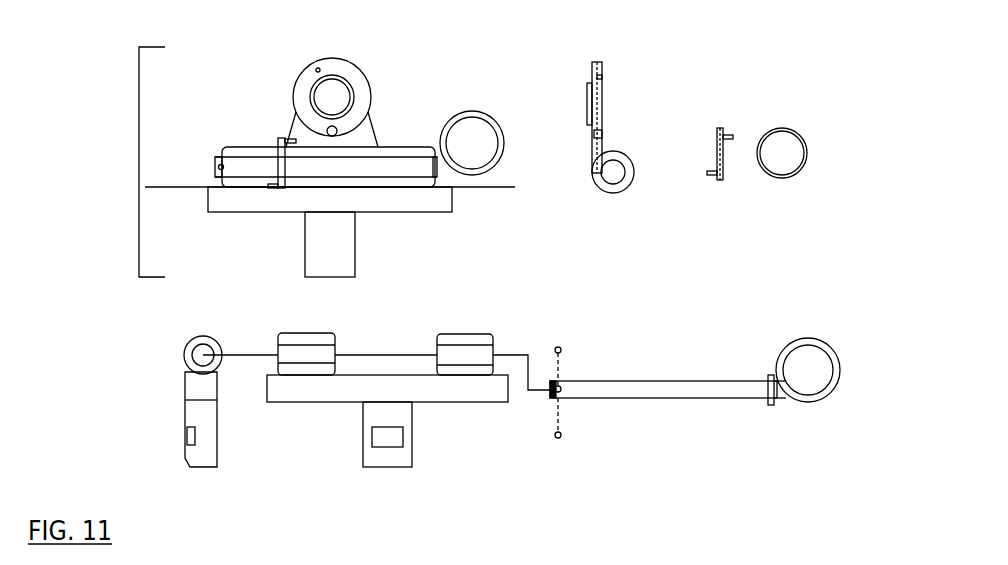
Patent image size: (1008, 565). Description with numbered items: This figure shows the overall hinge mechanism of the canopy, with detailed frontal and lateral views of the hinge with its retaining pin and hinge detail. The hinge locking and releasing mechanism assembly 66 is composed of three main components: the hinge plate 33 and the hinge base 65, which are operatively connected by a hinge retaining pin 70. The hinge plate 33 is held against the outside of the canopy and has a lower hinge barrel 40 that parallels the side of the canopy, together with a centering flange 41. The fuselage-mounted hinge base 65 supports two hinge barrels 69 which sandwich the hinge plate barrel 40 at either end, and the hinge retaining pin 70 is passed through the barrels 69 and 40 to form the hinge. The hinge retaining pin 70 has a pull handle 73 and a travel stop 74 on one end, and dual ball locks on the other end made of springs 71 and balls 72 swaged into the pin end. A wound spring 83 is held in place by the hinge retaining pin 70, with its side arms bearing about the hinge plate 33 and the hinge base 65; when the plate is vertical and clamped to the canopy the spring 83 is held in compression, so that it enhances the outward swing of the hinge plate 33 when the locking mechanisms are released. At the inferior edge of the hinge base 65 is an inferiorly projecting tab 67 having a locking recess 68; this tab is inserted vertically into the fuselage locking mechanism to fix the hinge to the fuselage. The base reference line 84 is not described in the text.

The hinge plate 33 is at (308, 80).
The hinge barrel of hinge plate 40 is at (600, 173).
The centering flange of hinge plate 41 is at (588, 110).
The hinge base 65 is at (372, 202).
The hinge locking and releasing mechanism assembly 66 is at (138, 153).
The inferiorly projecting tab 67 is at (337, 258).
The locking recess 68 is at (378, 438).
The hinge barrels 69 is at (293, 332).
The hinge retaining pin 70 is at (322, 170).
The springs 71 is at (553, 358).
The balls 72 is at (563, 348).
The pull handle 73 is at (810, 342).
The travel stop 74 is at (770, 390).
The wound spring 83 is at (280, 138).
The mounting surface 84 is at (183, 185).